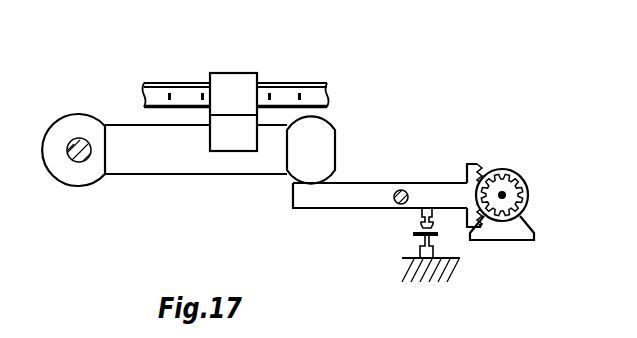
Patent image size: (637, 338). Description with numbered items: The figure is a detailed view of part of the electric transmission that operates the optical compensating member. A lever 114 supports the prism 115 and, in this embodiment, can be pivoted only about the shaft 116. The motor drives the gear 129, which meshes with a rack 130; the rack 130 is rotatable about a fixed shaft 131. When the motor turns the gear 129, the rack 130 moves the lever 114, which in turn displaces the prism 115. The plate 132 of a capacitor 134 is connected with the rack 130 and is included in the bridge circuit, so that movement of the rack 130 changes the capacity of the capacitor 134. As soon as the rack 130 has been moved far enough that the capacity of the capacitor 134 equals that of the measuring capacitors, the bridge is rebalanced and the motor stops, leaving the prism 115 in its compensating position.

The lever 114 is at (170, 168).
The prism 115 is at (228, 78).
The shaft 116 is at (70, 160).
The gear 129 is at (530, 180).
The rack 130 is at (472, 168).
The fixed shaft 131 is at (403, 190).
The plate 132 is at (418, 226).
The capacitor 134 is at (438, 235).